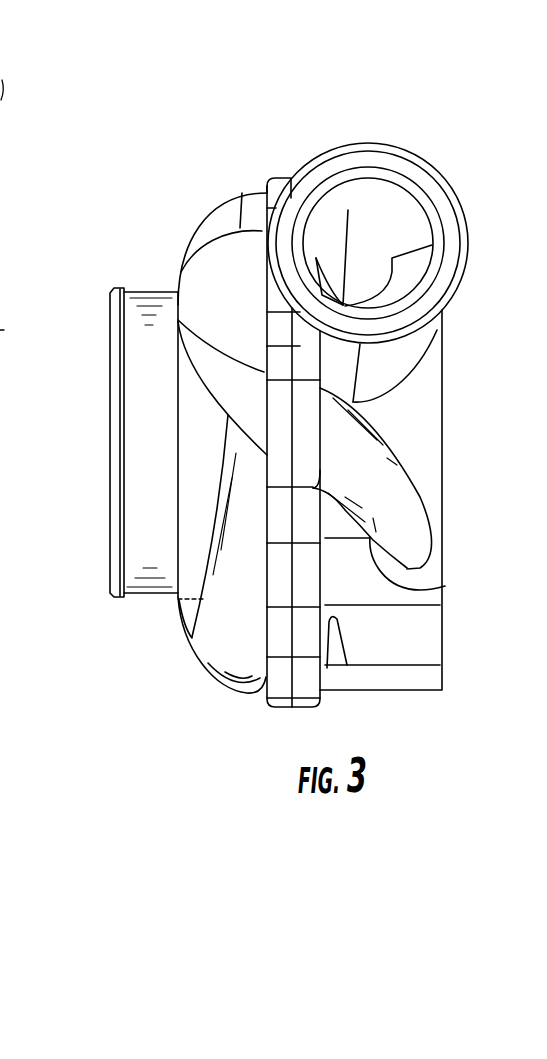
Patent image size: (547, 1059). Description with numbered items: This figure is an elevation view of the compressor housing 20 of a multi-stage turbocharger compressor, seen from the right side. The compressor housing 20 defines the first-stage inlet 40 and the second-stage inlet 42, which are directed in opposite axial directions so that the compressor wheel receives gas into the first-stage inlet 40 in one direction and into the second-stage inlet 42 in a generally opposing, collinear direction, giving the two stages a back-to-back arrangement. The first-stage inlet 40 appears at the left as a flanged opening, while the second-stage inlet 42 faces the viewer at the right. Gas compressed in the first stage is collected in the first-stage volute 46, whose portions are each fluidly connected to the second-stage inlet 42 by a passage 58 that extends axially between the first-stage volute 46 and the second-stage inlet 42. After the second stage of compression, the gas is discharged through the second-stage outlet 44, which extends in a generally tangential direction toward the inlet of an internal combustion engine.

The compressor housing 20 is at (334, 112).
The first-stage inlet 40 is at (80, 459).
The second-stage inlet 42 is at (469, 409).
The second-stage outlet 44 is at (398, 185).
The first-stage volute 46 is at (207, 670).
The passage 58 is at (440, 587).